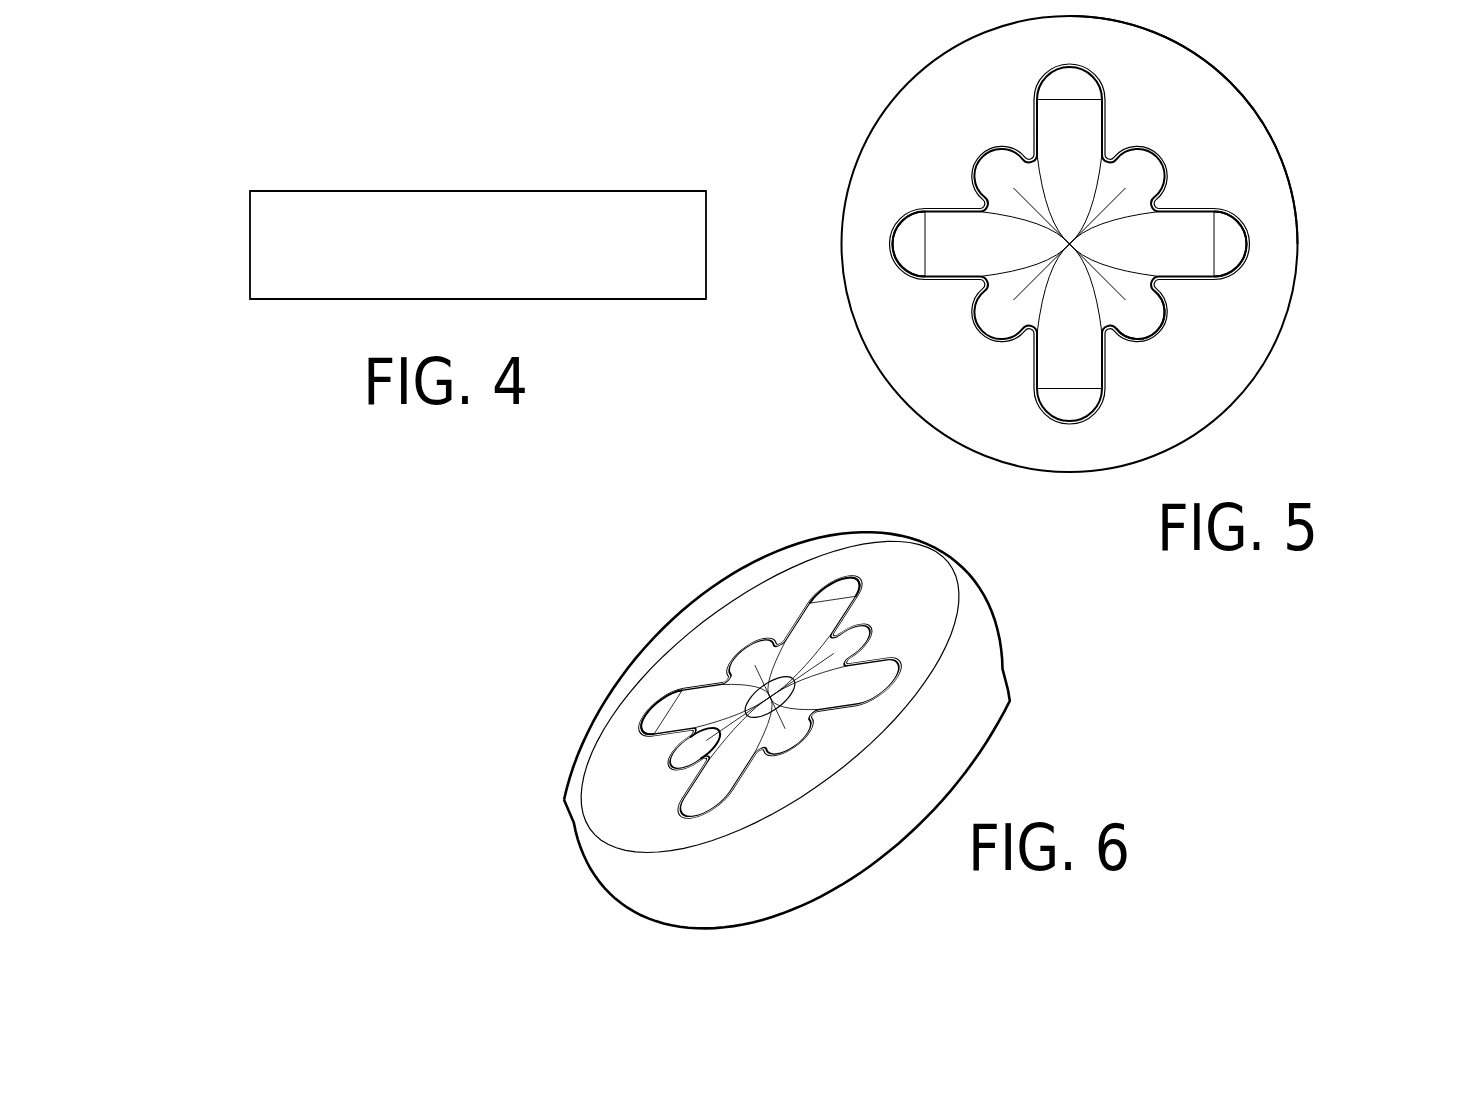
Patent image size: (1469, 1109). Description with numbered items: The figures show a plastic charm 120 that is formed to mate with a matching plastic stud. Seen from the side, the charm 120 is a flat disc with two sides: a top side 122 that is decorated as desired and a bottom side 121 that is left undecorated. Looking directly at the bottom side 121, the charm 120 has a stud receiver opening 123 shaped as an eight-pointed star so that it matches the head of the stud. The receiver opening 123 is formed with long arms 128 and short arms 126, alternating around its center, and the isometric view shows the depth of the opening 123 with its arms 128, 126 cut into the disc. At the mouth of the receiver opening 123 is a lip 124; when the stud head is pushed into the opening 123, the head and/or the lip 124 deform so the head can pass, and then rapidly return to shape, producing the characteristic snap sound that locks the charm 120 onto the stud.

In FIG. 4, the charm 120 is at (253, 240).
In FIG. 5, the charm 120 is at (1050, 472).
In FIG. 6, the charm 120 is at (992, 673).
In FIG. 4, the bottom side 121 is at (289, 293).
In FIG. 5, the bottom side 121 is at (1222, 113).
In FIG. 6, the bottom side 121 is at (705, 623).
In FIG. 4, the top side 122 is at (445, 193).
In FIG. 5, the stud receiver opening 123 is at (1075, 196).
In FIG. 6, the stud receiver opening 123 is at (768, 677).
In FIG. 5, the lip 124 is at (897, 237).
In FIG. 6, the lip 124 is at (637, 697).
In FIG. 5, the short arms 126 is at (1140, 321).
In FIG. 6, the short arms 126 is at (678, 748).
In FIG. 5, the long arms 128 is at (1205, 250).
In FIG. 6, the long arms 128 is at (830, 597).